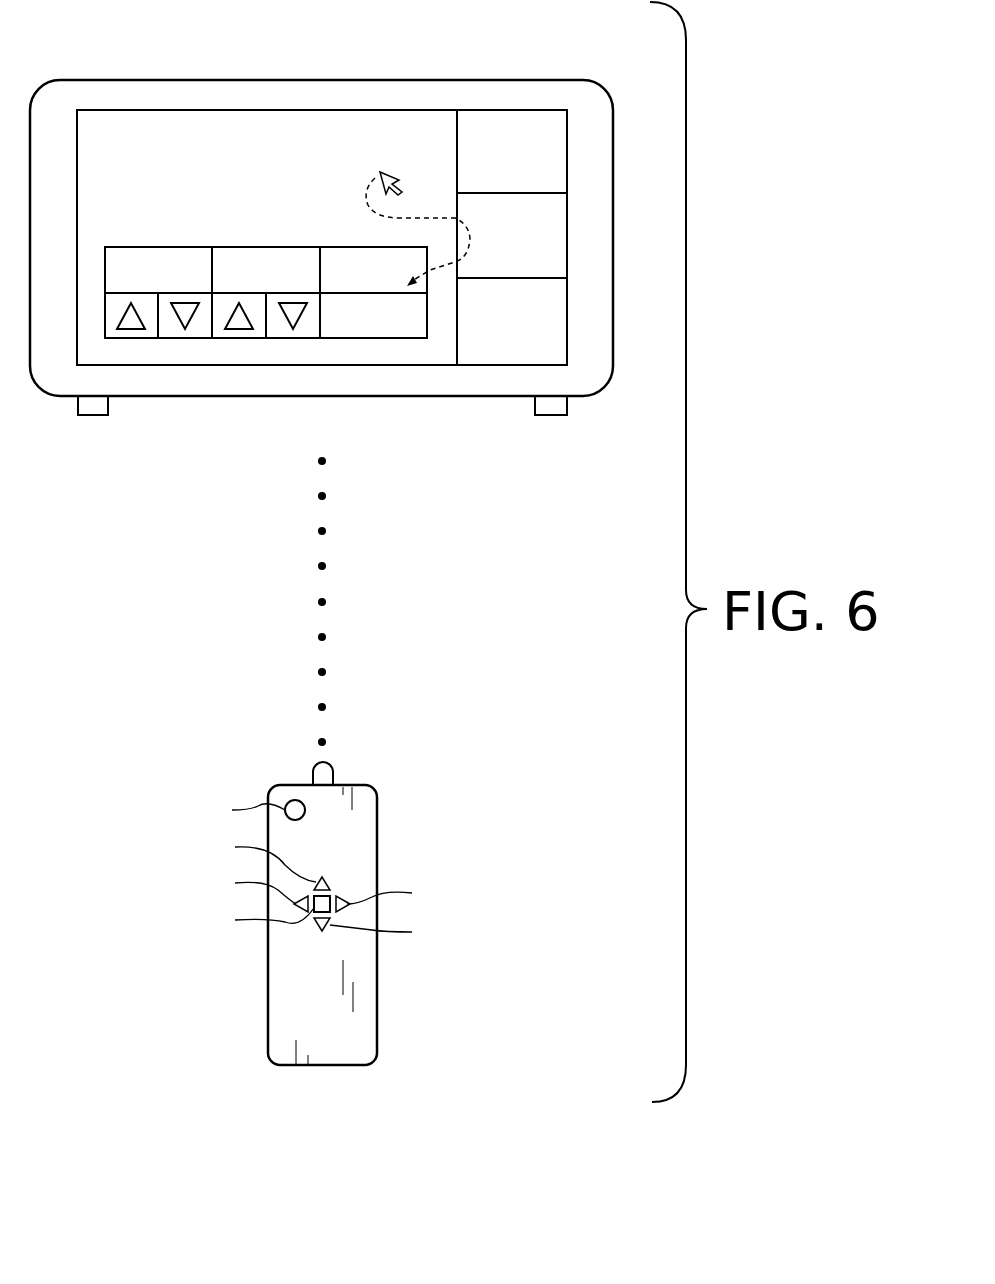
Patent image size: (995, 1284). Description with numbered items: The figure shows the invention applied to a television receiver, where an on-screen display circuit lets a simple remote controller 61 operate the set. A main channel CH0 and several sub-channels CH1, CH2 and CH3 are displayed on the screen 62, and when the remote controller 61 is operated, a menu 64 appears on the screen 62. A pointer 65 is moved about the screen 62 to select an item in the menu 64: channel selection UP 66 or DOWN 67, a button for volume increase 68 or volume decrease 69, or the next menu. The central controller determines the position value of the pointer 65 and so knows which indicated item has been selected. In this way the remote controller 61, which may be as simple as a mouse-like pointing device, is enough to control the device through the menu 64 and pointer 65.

The remote controller 61 is at (378, 1022).
The screen 62 is at (305, 110).
The menu 64 is at (243, 247).
The pointer 65 is at (389, 172).
The channel UP button 66 is at (131, 332).
The channel DOWN button 67 is at (180, 332).
The volume increase button 68 is at (228, 332).
The volume decrease button 69 is at (277, 332).